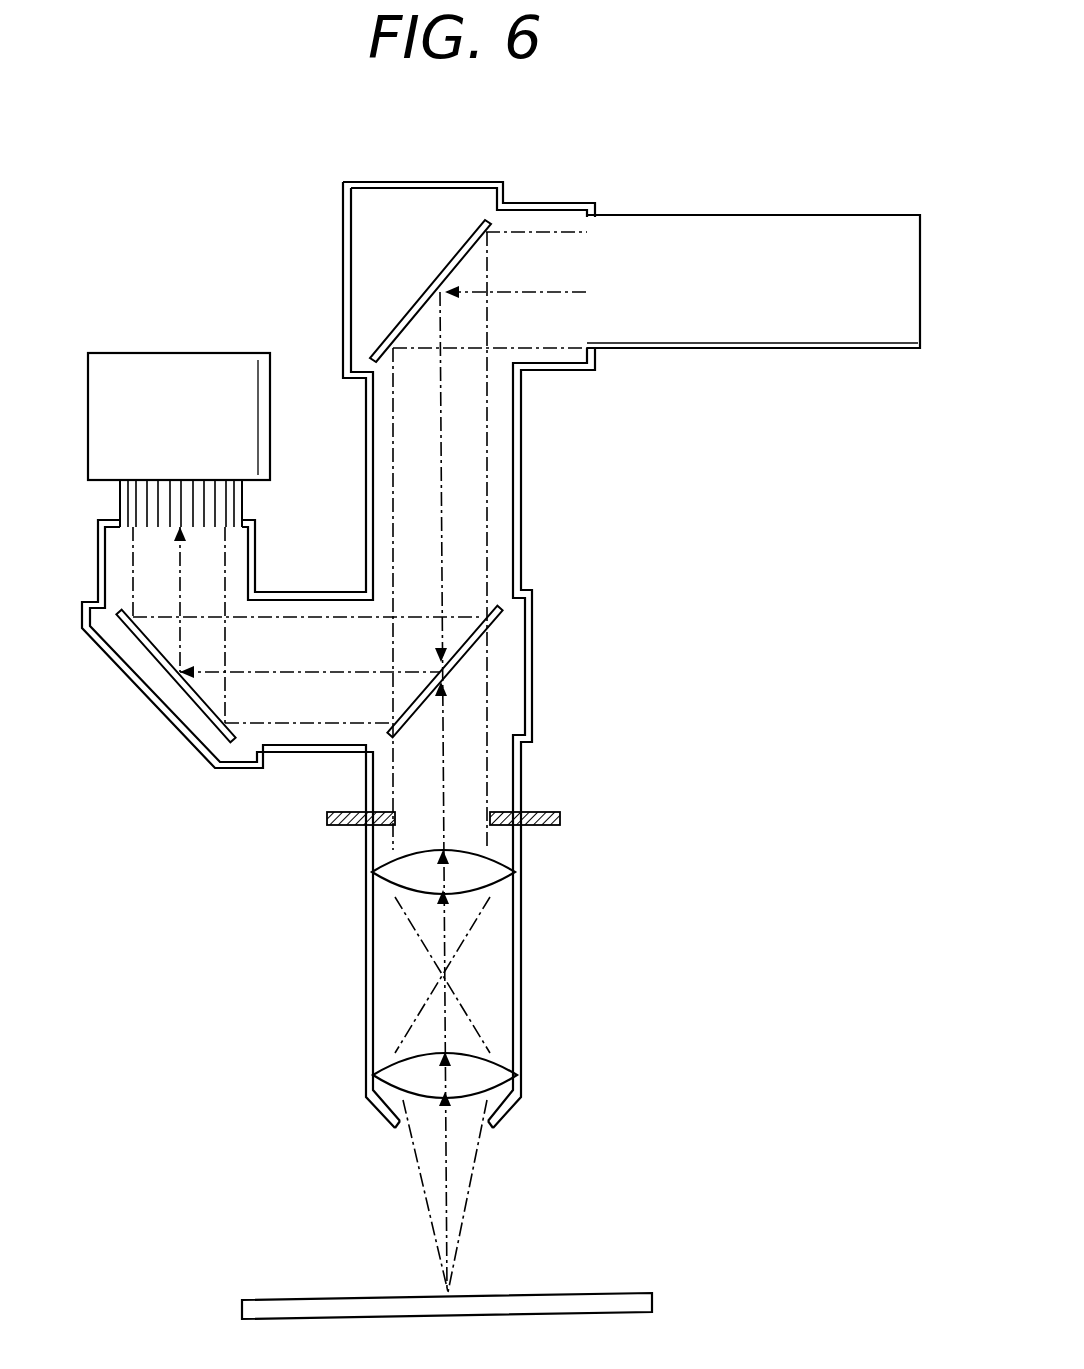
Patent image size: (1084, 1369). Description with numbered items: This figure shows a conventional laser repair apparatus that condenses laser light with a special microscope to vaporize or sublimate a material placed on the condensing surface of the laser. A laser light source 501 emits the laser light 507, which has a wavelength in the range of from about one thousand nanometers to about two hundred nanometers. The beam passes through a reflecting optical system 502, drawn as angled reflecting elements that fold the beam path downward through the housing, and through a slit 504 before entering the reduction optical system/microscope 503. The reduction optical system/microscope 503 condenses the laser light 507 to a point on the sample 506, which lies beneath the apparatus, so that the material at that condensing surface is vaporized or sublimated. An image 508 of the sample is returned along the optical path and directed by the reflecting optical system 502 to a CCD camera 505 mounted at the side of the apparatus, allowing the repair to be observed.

The laser light source 501 is at (780, 237).
The reflecting optical system 502 is at (447, 262).
The reduction optical system/microscope 503 is at (551, 842).
The slit 504 is at (560, 812).
The CCD camera 505 is at (150, 370).
The sample 506 is at (655, 1299).
The laser light 507 is at (470, 1200).
The image 508 is at (300, 672).